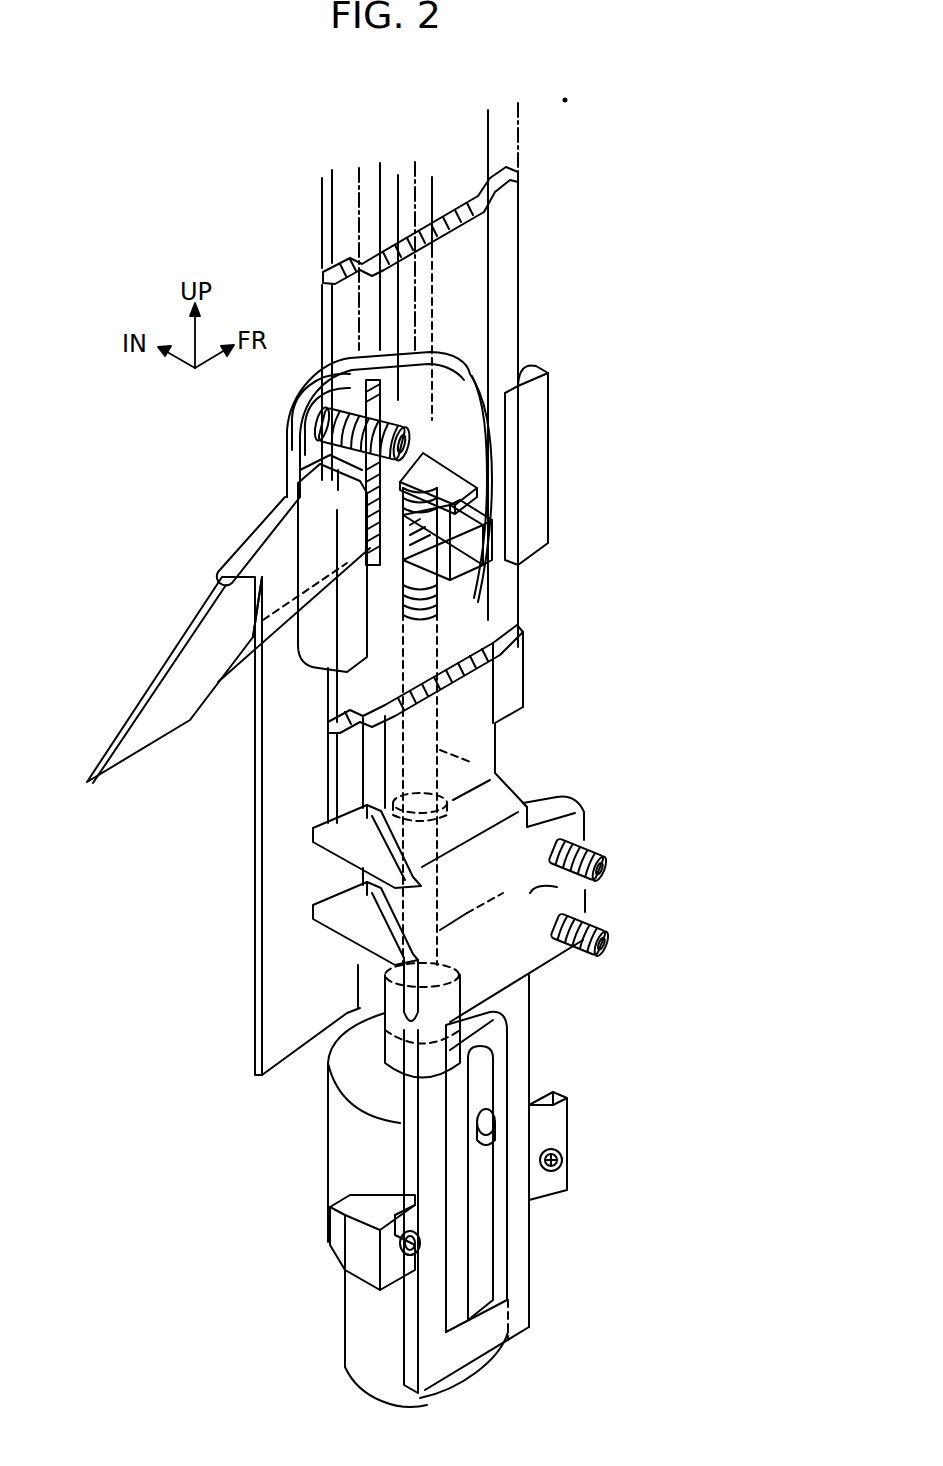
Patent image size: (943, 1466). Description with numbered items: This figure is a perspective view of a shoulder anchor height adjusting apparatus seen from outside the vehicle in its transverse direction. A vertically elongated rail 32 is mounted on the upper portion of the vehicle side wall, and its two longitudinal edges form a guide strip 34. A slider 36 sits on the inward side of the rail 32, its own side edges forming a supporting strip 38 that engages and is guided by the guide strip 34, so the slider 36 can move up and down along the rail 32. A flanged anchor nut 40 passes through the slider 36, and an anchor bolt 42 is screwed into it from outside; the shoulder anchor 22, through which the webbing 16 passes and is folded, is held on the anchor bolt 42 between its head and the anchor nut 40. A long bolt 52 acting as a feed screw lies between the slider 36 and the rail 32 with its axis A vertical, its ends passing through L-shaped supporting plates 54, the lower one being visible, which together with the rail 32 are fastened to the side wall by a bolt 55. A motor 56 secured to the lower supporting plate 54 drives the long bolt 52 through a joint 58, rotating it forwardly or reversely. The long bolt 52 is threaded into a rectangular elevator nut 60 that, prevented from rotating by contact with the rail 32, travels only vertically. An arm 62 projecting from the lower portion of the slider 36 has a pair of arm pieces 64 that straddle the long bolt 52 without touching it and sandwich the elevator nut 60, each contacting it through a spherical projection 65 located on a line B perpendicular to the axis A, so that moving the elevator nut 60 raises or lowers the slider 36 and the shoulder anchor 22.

The webbing 16 is at (157, 722).
The shoulder anchor 22 is at (253, 526).
The rail 32 is at (524, 268).
The guide strip 34 is at (510, 229).
The slider 36 is at (553, 445).
The supporting strip 38 is at (538, 375).
The anchor nut 40 is at (483, 349).
The anchor bolt 42 is at (290, 403).
The long bolt 52 is at (496, 618).
The supporting plate 54 is at (337, 855).
The bolt 55 is at (612, 943).
The motor 56 is at (343, 1153).
The joint 58 is at (385, 1014).
The elevator nut 60 is at (495, 530).
The arm 62 is at (452, 463).
The arm pieces 64 is at (458, 481).
The spherical projection 65 is at (447, 526).
The axis of the long bolt A is at (418, 170).
The line B is at (226, 606).